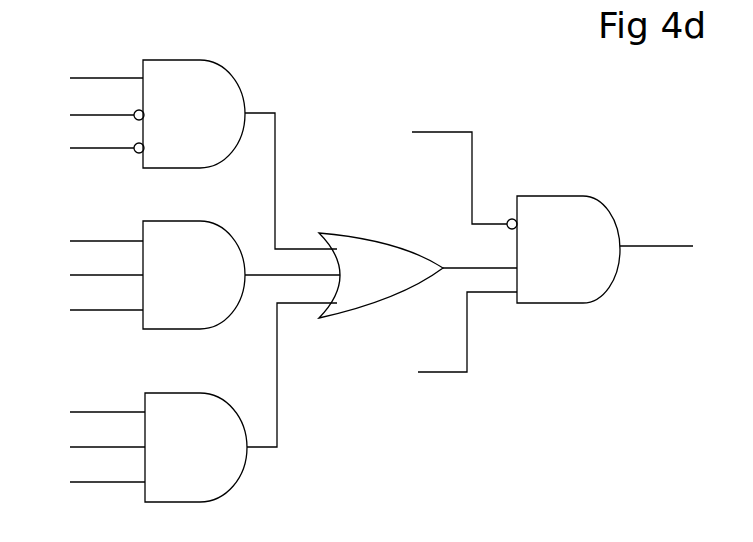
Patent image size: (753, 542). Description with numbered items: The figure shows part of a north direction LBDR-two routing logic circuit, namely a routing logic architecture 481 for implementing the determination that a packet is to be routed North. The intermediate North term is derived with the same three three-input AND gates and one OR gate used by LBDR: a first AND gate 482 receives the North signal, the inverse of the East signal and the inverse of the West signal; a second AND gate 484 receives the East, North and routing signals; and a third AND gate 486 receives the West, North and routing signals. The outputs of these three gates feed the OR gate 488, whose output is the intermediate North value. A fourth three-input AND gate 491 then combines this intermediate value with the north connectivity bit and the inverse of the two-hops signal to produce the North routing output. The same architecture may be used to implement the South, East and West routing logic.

The routing logic architecture 481 is at (375, 267).
The 3-input AND gate 482 is at (233, 65).
The 3-input AND gate 484 is at (214, 221).
The 3-input AND gate 486 is at (203, 393).
The OR gate 488 is at (352, 345).
The 3-input AND gate 491 is at (612, 208).